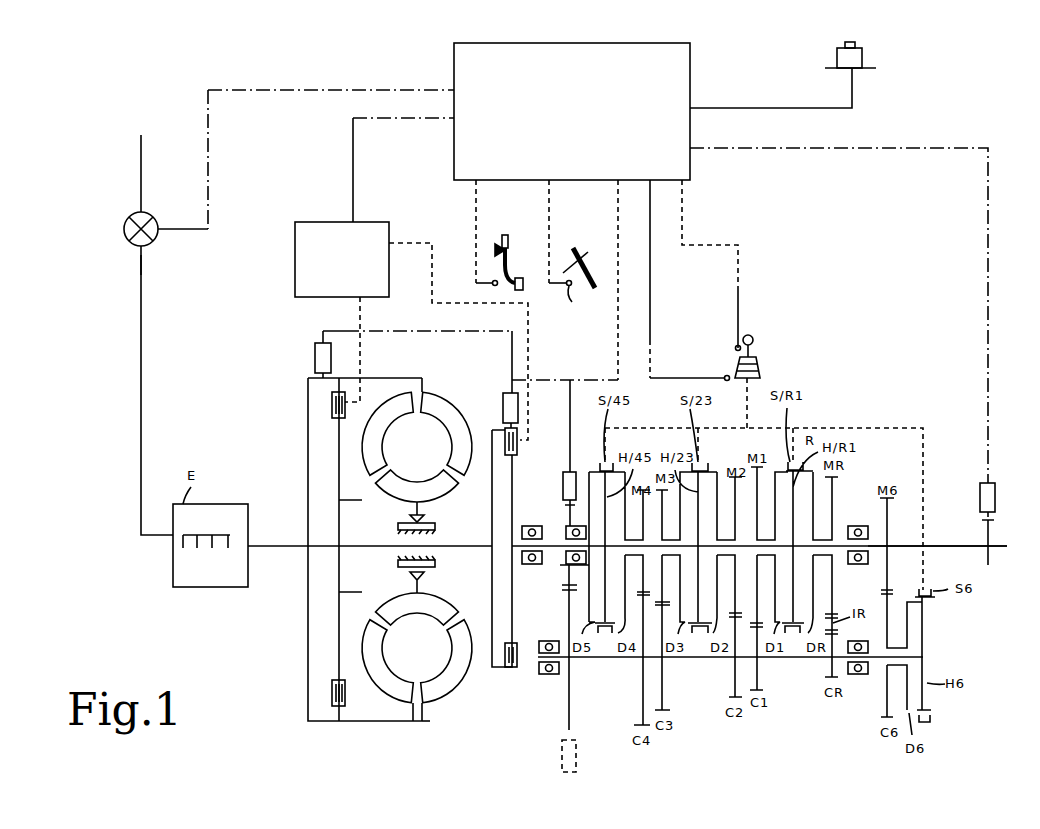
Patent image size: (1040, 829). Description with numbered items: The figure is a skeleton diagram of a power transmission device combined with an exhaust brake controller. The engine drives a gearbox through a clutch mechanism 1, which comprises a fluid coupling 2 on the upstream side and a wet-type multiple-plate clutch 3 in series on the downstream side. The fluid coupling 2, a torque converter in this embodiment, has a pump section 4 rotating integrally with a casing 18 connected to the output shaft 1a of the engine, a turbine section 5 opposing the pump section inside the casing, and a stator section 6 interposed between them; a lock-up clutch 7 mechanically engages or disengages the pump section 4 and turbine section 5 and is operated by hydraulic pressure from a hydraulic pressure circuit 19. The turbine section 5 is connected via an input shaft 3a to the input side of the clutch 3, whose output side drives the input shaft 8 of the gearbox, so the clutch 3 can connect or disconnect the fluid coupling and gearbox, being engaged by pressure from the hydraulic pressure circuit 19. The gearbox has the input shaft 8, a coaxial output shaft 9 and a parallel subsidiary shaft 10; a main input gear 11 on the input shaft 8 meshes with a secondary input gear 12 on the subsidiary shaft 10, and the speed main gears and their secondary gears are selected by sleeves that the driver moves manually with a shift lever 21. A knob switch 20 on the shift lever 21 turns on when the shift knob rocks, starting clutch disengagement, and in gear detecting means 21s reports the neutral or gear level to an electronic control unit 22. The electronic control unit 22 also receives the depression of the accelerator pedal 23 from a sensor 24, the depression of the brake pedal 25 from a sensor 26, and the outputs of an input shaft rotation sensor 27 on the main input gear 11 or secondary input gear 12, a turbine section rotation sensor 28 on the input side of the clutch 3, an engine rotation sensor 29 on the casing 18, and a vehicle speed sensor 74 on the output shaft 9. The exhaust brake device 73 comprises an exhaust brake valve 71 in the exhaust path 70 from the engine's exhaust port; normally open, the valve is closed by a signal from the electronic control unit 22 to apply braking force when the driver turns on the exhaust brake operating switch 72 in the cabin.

The clutch mechanism 1 is at (474, 727).
The output shaft 1a is at (283, 545).
The fluid coupling 2 is at (443, 706).
The wet-type multiple-plate clutch 3 is at (508, 672).
The input shaft 3a is at (470, 551).
The pump section 4 is at (456, 414).
The turbine section 5 is at (394, 397).
The stator section 6 is at (441, 497).
The lock-up clutch 7 is at (332, 406).
The input shaft 8 is at (519, 545).
The output shaft 9 is at (900, 545).
The subsidiary shaft 10 is at (608, 660).
The main input gear 11 is at (563, 586).
The secondary input gear 12 is at (563, 730).
The casing 18 is at (373, 722).
The hydraulic pressure circuit 19 is at (295, 232).
The knob switch 20 is at (735, 348).
The shift lever 21 is at (753, 338).
The in gear detecting means 21s is at (725, 376).
The electronic control unit 22 is at (690, 170).
The accelerator pedal 23 is at (584, 253).
The sensor 24 is at (574, 307).
The brake pedal 25 is at (505, 235).
The sensor 26 is at (494, 281).
The input shaft rotation sensor 27 is at (563, 487).
The turbine section rotation sensor 28 is at (518, 402).
The engine rotation sensor 29 is at (315, 352).
The exhaust path 70 is at (141, 405).
The exhaust brake valve 71 is at (134, 218).
The exhaust brake operating switch 72 is at (864, 58).
The exhaust brake device 73 is at (116, 262).
The vehicle speed sensor 74 is at (983, 490).